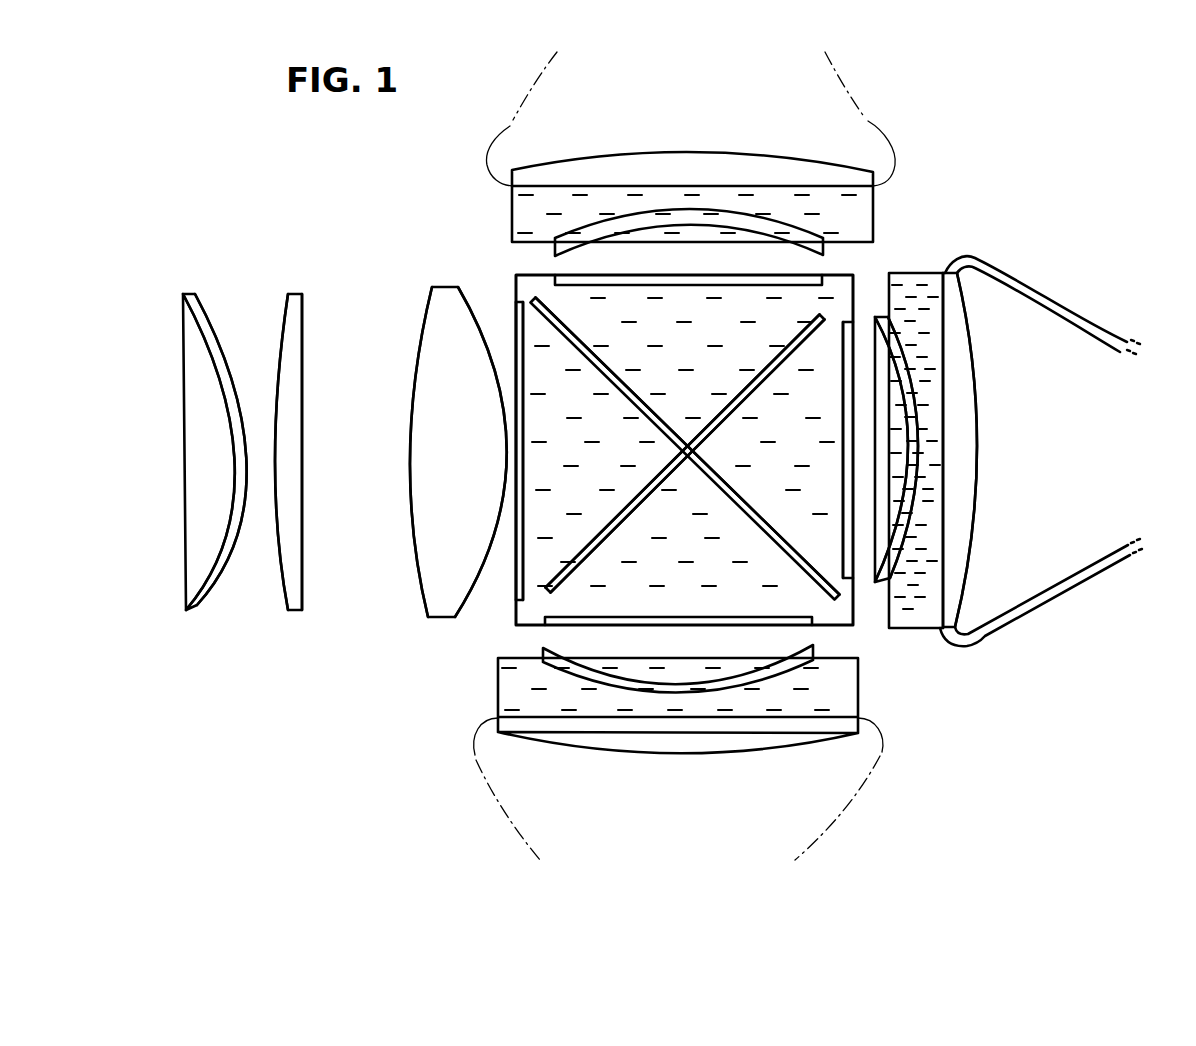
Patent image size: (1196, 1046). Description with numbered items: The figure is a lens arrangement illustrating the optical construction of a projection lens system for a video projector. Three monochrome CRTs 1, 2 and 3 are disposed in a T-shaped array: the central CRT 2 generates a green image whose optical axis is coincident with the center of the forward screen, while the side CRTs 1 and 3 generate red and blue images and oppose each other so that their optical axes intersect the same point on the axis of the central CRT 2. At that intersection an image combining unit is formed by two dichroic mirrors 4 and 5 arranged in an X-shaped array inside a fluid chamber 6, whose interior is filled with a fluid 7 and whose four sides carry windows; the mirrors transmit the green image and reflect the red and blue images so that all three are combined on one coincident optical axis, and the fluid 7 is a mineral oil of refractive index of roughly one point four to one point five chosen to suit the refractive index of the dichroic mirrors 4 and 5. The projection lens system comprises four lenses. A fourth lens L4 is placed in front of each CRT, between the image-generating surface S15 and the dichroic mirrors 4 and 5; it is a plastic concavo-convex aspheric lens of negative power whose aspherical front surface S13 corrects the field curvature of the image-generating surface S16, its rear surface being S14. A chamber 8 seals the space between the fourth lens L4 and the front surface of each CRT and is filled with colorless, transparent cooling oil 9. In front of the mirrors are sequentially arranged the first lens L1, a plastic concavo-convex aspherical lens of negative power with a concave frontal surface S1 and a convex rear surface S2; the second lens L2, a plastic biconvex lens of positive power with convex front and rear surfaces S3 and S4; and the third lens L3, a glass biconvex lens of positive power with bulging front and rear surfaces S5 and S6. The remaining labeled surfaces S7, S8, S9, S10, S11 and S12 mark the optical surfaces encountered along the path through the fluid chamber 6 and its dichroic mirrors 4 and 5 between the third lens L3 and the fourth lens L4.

The side CRT 1 is at (878, 125).
The central CRT 2 is at (1083, 322).
The side CRT 3 is at (853, 783).
The dichroic mirror 4 is at (774, 359).
The dichroic mirror 5 is at (576, 337).
The fluid chamber 6 is at (517, 277).
The fluid 7 is at (610, 614).
The chamber 8 is at (910, 273).
The cooling oil 9 is at (929, 282).
The first lens L1 is at (187, 613).
The second lens L2 is at (291, 614).
The third lens L3 is at (440, 622).
The fourth lens L4 is at (905, 570).
The frontal surface of first lens S1 is at (234, 526).
The rear surface of first lens S2 is at (222, 572).
The front surface of second lens S3 is at (283, 561).
The rear surface of second lens S4 is at (303, 554).
The front surface of third lens S5 is at (412, 513).
The rear surface of third lens S6 is at (466, 601).
The window surface S7 is at (515, 342).
The window surface S8 is at (523, 554).
The dichroic mirror surface S9 is at (626, 505).
The dichroic mirror surface S10 is at (594, 549).
The dichroic mirror surface S11 is at (841, 476).
The window surface S12 is at (853, 541).
The front surface of fourth lens S13 is at (907, 465).
The rear surface of fourth lens S14 is at (906, 553).
The image-generating surface S15 is at (938, 532).
The image-generating surface of the CRT S16 is at (977, 432).